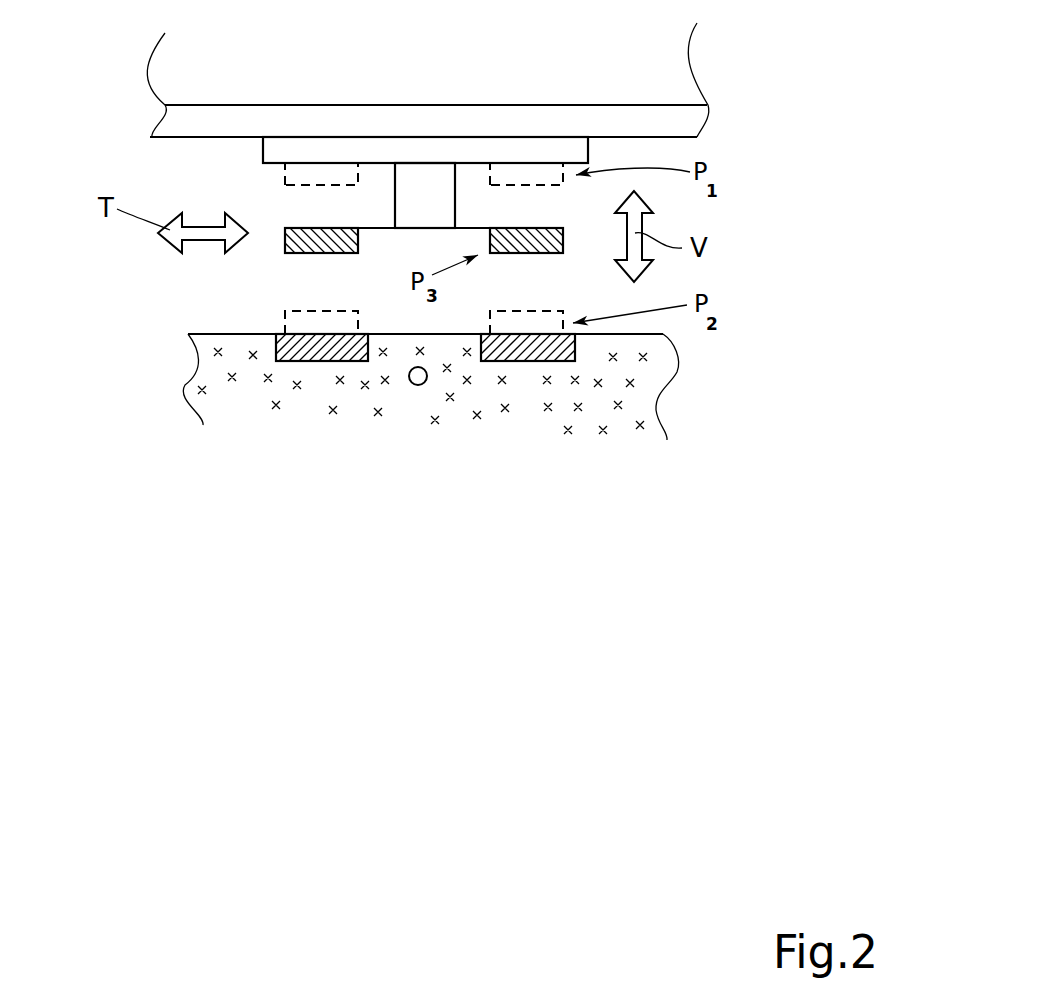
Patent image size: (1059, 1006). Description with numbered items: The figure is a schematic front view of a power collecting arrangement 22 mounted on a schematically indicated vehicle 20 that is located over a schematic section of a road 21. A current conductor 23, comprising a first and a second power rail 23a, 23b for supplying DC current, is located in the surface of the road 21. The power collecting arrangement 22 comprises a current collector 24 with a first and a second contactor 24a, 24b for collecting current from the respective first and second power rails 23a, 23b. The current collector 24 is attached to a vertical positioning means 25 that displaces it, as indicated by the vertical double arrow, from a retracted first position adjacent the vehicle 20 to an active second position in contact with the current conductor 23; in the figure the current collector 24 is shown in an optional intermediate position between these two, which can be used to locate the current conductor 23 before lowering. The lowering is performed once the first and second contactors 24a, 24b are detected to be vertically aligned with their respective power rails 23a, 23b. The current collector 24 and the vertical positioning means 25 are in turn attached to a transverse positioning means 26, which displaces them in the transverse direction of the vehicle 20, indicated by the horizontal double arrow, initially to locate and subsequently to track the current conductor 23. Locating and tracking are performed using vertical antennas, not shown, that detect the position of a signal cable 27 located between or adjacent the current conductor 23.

The vehicle 20 is at (677, 118).
The road 21 is at (648, 392).
The power collecting arrangement 22 is at (212, 179).
The current conductor 23 is at (285, 380).
The first power rail 23a is at (322, 361).
The second power rail 23b is at (538, 361).
The current collector 24 is at (280, 265).
The first contactor 24a is at (315, 232).
The second contactor 24b is at (533, 237).
The vertical positioning means 25 is at (423, 175).
The transverse positioning means 26 is at (337, 148).
The signal cable 27 is at (418, 386).